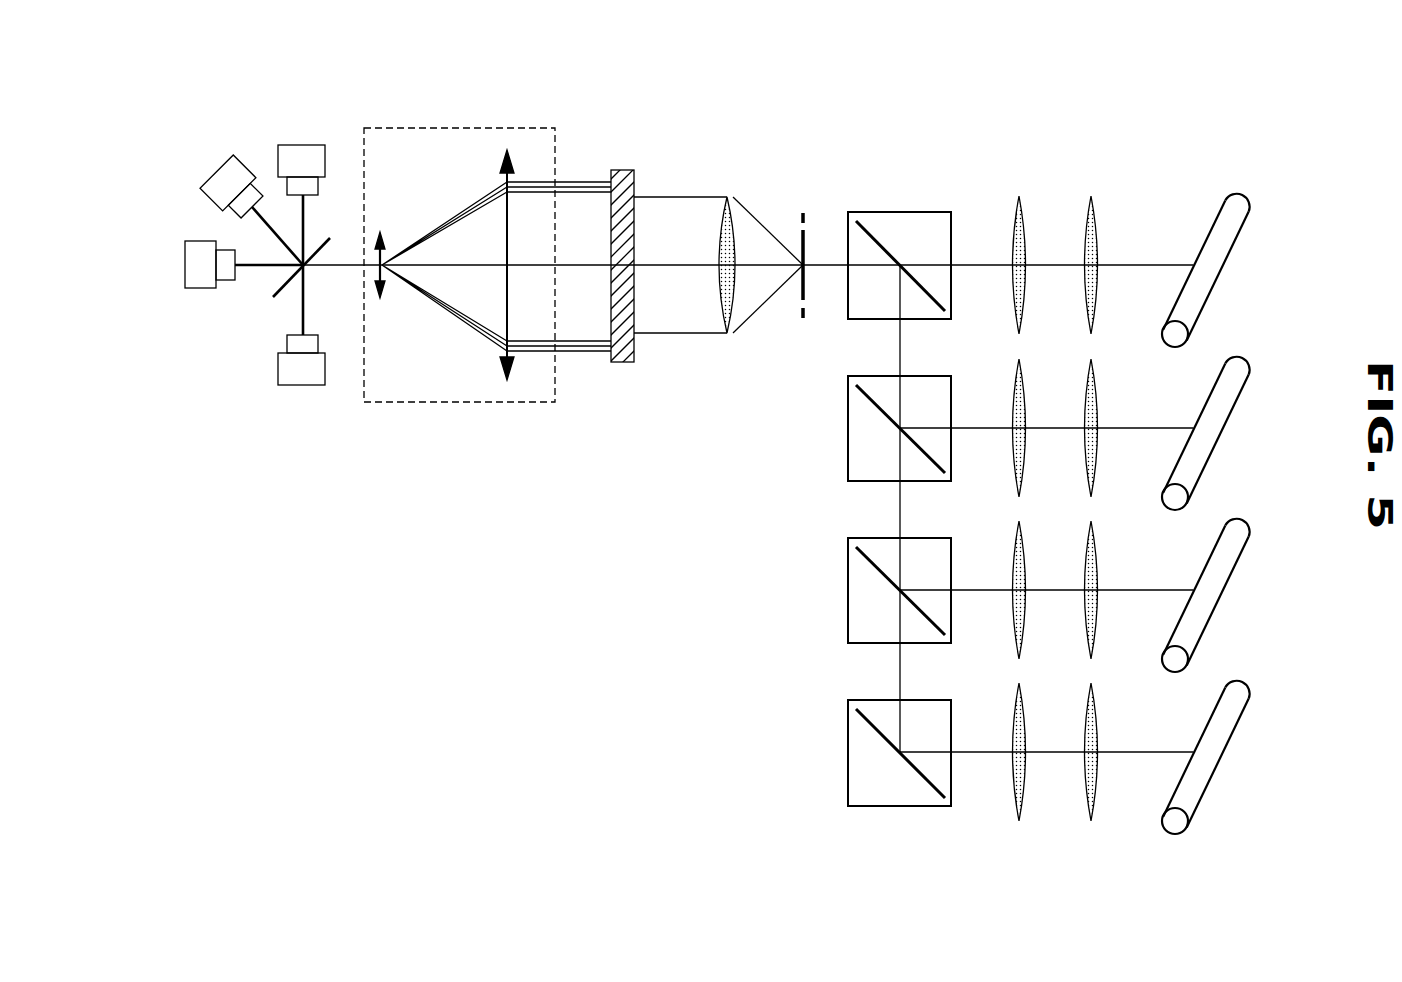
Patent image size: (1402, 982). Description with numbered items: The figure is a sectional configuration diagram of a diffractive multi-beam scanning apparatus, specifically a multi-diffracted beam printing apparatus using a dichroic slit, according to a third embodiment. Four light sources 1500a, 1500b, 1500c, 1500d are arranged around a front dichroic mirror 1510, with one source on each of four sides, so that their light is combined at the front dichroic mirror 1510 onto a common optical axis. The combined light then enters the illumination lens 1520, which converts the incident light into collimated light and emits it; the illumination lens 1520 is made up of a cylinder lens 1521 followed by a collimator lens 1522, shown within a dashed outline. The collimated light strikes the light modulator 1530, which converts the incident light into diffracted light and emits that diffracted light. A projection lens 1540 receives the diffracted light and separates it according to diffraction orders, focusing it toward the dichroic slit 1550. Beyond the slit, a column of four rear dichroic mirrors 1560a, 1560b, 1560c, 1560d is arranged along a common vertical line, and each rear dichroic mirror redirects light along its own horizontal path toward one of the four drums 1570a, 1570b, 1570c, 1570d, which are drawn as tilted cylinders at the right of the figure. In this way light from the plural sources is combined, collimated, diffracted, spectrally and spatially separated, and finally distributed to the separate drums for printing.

The light source 1500a is at (303, 145).
The light source 1500b is at (220, 168).
The light source 1500c is at (184, 263).
The light source 1500d is at (303, 385).
The front dichroic mirror 1510 is at (272, 292).
The illumination lens 1520 is at (487, 228).
The cylinder lens 1521 is at (385, 240).
The collimator lens 1522 is at (516, 152).
The light modulator 1530 is at (623, 170).
The projection lens 1540 is at (725, 197).
The dichroic slit 1550 is at (804, 212).
The rear dichroic mirror 1560a is at (899, 212).
The rear dichroic mirror 1560b is at (848, 428).
The rear dichroic mirror 1560c is at (848, 590).
The rear dichroic mirror 1560d is at (848, 752).
The drum 1570a is at (1233, 244).
The drum 1570b is at (1233, 407).
The drum 1570c is at (1233, 569).
The drum 1570d is at (1233, 731).